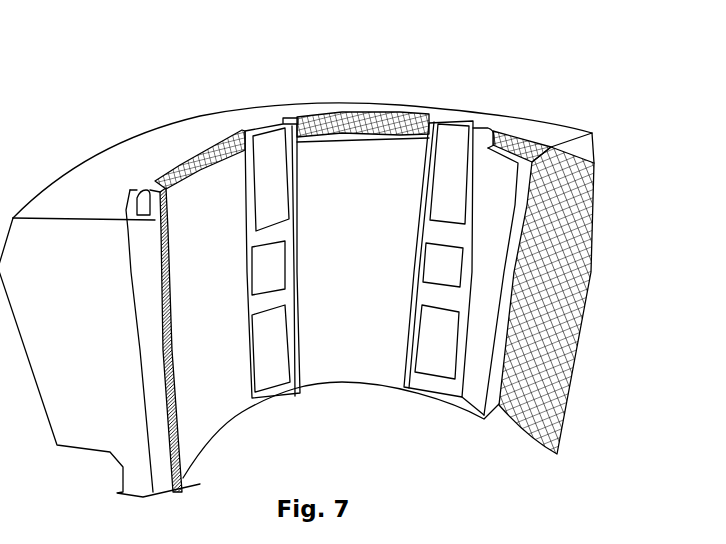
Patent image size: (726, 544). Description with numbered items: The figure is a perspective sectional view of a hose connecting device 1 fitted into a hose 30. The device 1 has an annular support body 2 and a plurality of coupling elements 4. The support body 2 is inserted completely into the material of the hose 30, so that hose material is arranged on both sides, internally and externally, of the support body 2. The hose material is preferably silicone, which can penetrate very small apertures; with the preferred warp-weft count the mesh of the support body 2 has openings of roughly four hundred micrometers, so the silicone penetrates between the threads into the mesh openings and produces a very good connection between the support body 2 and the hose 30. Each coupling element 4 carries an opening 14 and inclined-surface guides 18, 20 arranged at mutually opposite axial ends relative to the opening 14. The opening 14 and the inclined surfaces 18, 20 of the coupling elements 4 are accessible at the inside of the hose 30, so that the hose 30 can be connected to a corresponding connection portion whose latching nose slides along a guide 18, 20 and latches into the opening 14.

The hose connecting device 1 is at (463, 85).
The support body 2 is at (600, 160).
The coupling element 4 is at (133, 188).
The opening 14 is at (280, 268).
The guide 18 is at (271, 157).
The guide 20 is at (275, 371).
The hose 30 is at (97, 148).